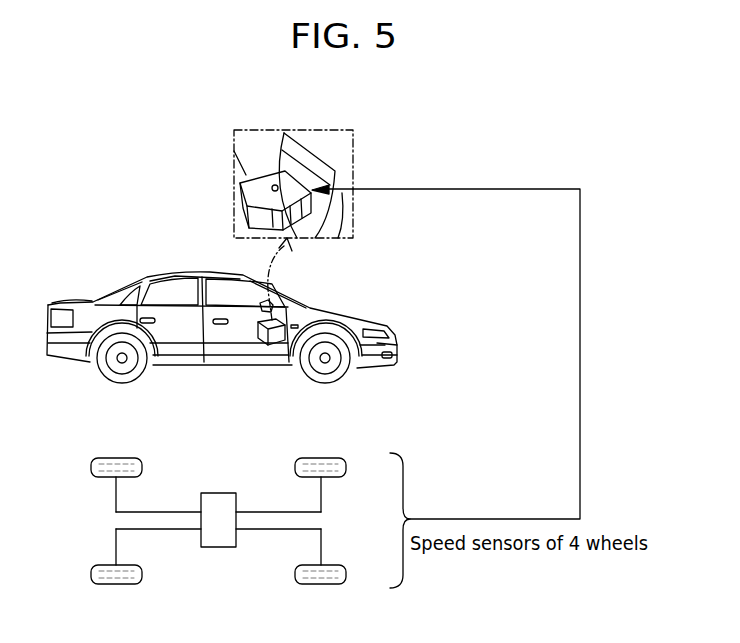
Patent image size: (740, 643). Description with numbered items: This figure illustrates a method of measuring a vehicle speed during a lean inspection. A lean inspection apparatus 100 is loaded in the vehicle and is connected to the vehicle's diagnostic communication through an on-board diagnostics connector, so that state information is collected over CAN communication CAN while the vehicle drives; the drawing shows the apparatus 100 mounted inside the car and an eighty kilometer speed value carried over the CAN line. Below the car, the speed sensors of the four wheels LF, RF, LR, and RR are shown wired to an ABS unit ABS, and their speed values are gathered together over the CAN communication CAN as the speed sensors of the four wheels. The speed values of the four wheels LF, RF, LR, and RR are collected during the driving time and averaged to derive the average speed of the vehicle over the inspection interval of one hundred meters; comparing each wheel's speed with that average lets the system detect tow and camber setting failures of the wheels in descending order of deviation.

The lean inspection apparatus 100 is at (248, 190).
The CAN communication CAN is at (466, 338).
The anti-lock brake system unit ABS is at (218, 520).
The left rear wheel LR is at (129, 485).
The right rear wheel RR is at (129, 559).
The left front wheel LF is at (333, 485).
The right front wheel RF is at (333, 559).